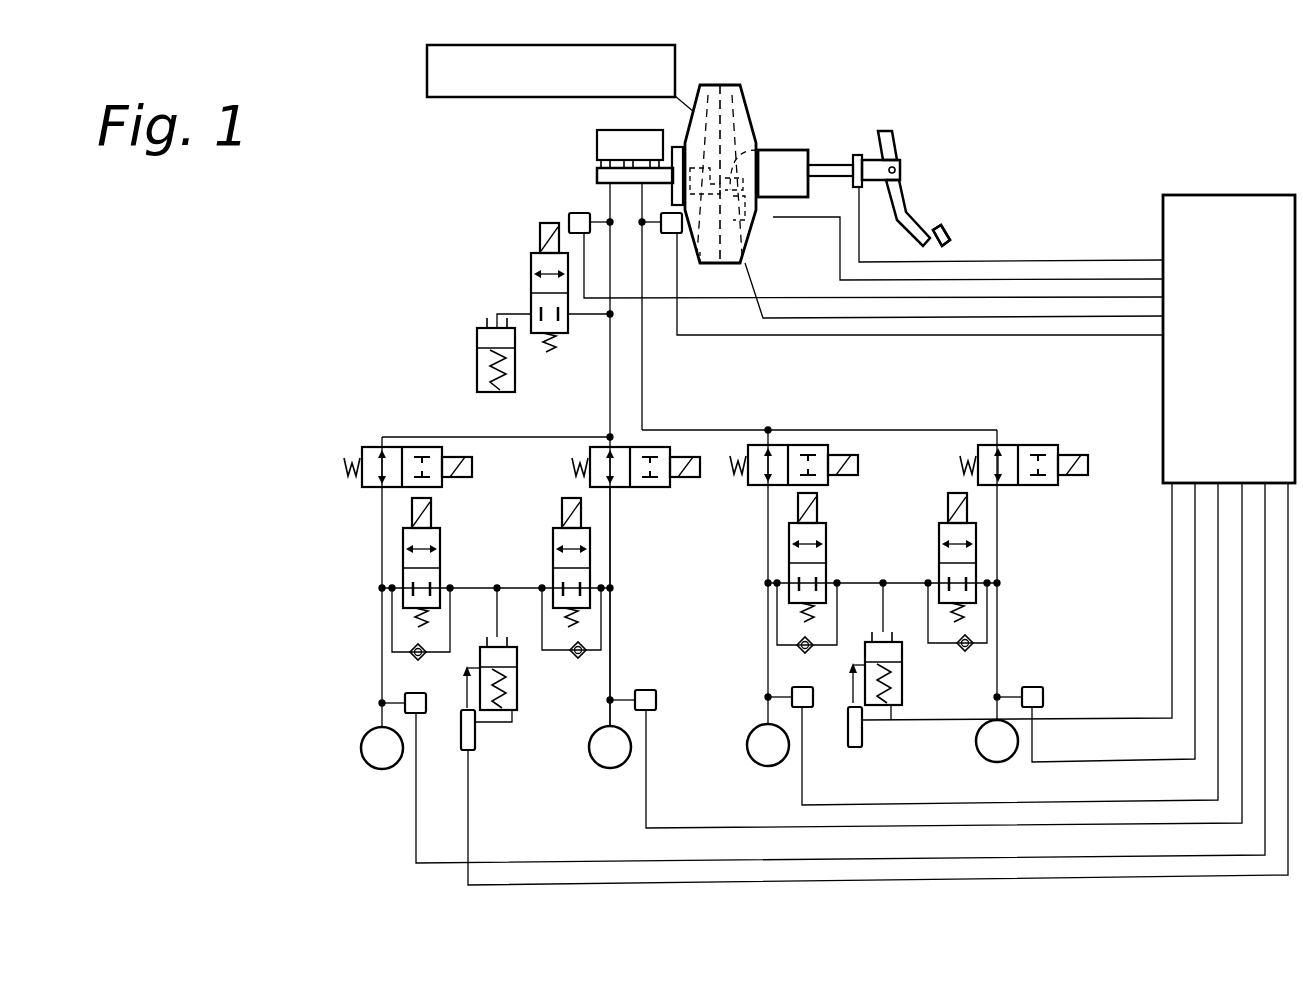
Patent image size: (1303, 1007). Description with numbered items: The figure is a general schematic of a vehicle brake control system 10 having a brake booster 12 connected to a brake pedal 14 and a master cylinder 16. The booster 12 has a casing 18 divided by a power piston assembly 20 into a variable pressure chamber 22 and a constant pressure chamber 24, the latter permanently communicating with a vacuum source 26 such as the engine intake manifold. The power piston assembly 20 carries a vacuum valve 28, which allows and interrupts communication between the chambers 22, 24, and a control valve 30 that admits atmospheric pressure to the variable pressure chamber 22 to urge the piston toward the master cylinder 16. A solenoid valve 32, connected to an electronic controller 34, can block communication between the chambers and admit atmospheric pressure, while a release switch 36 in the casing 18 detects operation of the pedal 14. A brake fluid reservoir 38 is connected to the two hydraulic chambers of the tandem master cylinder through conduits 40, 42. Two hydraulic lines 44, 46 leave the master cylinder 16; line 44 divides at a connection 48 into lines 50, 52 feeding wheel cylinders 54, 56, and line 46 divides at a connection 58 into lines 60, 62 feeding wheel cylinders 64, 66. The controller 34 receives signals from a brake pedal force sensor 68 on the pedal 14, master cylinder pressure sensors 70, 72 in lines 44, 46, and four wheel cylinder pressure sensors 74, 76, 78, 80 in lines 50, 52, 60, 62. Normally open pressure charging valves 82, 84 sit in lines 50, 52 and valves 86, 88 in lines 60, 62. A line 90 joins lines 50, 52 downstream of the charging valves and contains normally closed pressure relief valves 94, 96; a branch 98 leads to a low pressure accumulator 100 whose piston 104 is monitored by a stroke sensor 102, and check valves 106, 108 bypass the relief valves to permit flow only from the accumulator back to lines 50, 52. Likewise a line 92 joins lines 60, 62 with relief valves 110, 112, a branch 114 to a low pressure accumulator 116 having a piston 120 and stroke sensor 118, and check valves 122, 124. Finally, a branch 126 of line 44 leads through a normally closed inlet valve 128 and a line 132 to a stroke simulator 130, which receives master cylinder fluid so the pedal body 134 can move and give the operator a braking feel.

The vehicle brake control system 10 is at (1033, 136).
The brake booster 12 is at (758, 116).
The brake pedal 14 is at (908, 194).
The master cylinder 16 is at (597, 178).
The casing 18 is at (753, 284).
The power piston assembly 20 is at (702, 264).
The variable pressure chamber 22 is at (742, 84).
The constant pressure chamber 24 is at (708, 84).
The vacuum source 26 is at (558, 44).
The vacuum valve 28 is at (757, 146).
The control valve 30 is at (760, 212).
The solenoid valve 32 is at (757, 230).
The electronic controller 34 is at (1216, 195).
The release switch 36 is at (760, 222).
The brake fluid reservoir 38 is at (597, 138).
The conduit 40 is at (597, 163).
The conduit 42 is at (676, 146).
The hydraulic line 44 is at (609, 380).
The hydraulic line 46 is at (643, 358).
The connection 48 is at (605, 436).
The hydraulic line 50 is at (381, 510).
The hydraulic line 52 is at (612, 530).
The wheel cylinder 54 is at (380, 770).
The wheel cylinder 56 is at (612, 769).
The connection 58 is at (650, 430).
The hydraulic line 60 is at (767, 506).
The hydraulic line 62 is at (999, 524).
The wheel cylinder 64 is at (768, 767).
The wheel cylinder 66 is at (997, 763).
The brake pedal force sensor 68 is at (857, 154).
The master cylinder hydraulic pressure sensor 70 is at (568, 220).
The master cylinder hydraulic pressure sensor 72 is at (672, 234).
The wheel cylinder hydraulic pressure sensor 74 is at (420, 715).
The wheel cylinder hydraulic pressure sensor 76 is at (650, 712).
The wheel cylinder hydraulic pressure sensor 78 is at (806, 709).
The wheel cylinder hydraulic pressure sensor 80 is at (1043, 698).
The pressure charging valve 82 is at (372, 446).
The pressure charging valve 84 is at (589, 460).
The pressure charging valve 86 is at (832, 446).
The pressure charging valve 88 is at (1062, 446).
The line 90 is at (462, 586).
The line 92 is at (855, 582).
The pressure relief valve 94 is at (402, 549).
The pressure relief valve 96 is at (552, 549).
The branch 98 is at (500, 634).
The low pressure accumulator 100 is at (512, 722).
The stroke sensor 102 is at (472, 752).
The piston 104 is at (518, 670).
The check valve 106 is at (410, 658).
The check valve 108 is at (590, 652).
The pressure relief valve 110 is at (788, 549).
The pressure relief valve 112 is at (938, 549).
The branch 114 is at (885, 630).
The low pressure accumulator 116 is at (892, 722).
The stroke sensor 118 is at (856, 748).
The piston 120 is at (904, 666).
The check valve 122 is at (798, 652).
The check valve 124 is at (975, 647).
The branch 126 is at (596, 318).
The inlet valve 128 is at (532, 258).
The stroke simulator 130 is at (477, 358).
The line 132 is at (520, 313).
The pedal body 134 is at (948, 240).